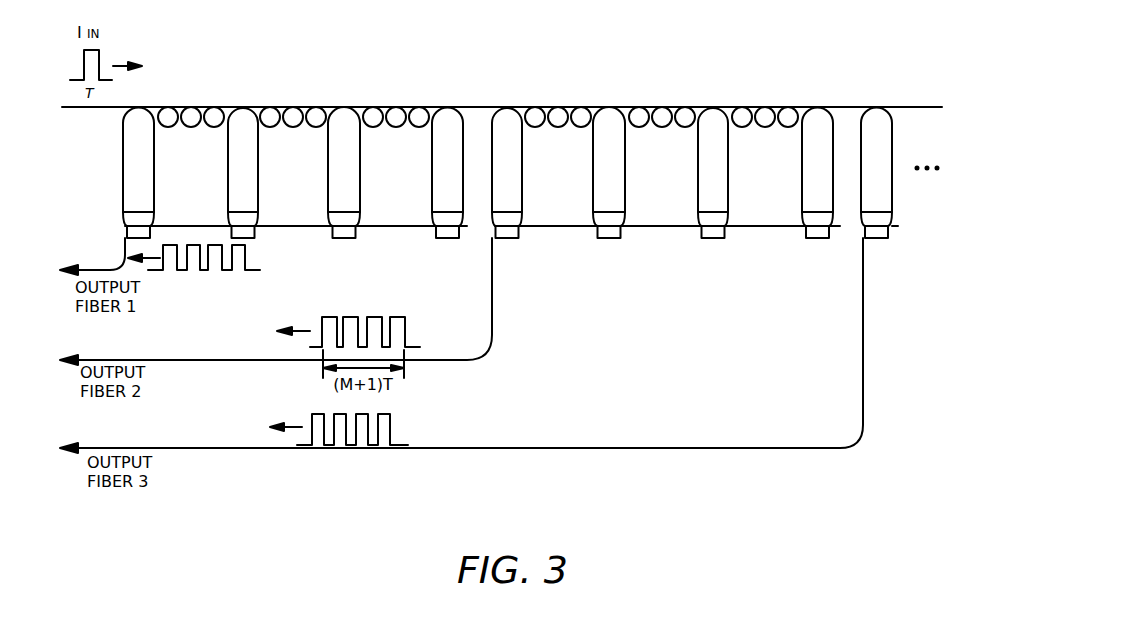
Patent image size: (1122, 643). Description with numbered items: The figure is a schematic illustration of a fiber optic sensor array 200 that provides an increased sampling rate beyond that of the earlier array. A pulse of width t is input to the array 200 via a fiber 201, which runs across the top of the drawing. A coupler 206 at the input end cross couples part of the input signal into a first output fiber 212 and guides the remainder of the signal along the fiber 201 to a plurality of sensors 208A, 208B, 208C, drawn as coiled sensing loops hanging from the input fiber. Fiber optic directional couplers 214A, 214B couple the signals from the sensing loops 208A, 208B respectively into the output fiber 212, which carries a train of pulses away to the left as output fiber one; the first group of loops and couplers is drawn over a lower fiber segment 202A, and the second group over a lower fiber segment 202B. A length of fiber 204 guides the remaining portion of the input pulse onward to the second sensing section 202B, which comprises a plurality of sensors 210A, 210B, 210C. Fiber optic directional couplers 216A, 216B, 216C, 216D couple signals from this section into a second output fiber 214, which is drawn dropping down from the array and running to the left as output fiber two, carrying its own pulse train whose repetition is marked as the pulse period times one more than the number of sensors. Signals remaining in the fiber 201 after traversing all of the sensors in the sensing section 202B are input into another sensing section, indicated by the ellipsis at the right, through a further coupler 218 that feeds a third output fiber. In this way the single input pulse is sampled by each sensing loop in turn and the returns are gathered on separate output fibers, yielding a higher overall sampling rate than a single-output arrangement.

The array 200 is at (587, 290).
The fiber 201 is at (79, 108).
The first output fiber segment 202A is at (384, 250).
The second sensing section 202B is at (671, 248).
The length of fiber 204 is at (492, 90).
The coupler 206 is at (126, 215).
The sensor 208A is at (196, 92).
The sensor 208B is at (298, 92).
The sensor 208C is at (401, 92).
The sensor 210A is at (563, 92).
The sensor 210B is at (665, 92).
The sensor 210C is at (768, 92).
The first output fiber 212 is at (101, 268).
The second output fiber 214 is at (492, 308).
The fiber optic directional coupler 214A is at (258, 215).
The fiber optic directional coupler 214B is at (356, 215).
The fiber optic directional coupler 216A is at (520, 215).
The fiber optic directional coupler 216B is at (623, 215).
The fiber optic directional coupler 216C is at (726, 215).
The fiber optic directional coupler 216D is at (814, 240).
The coupler 218 is at (875, 218).